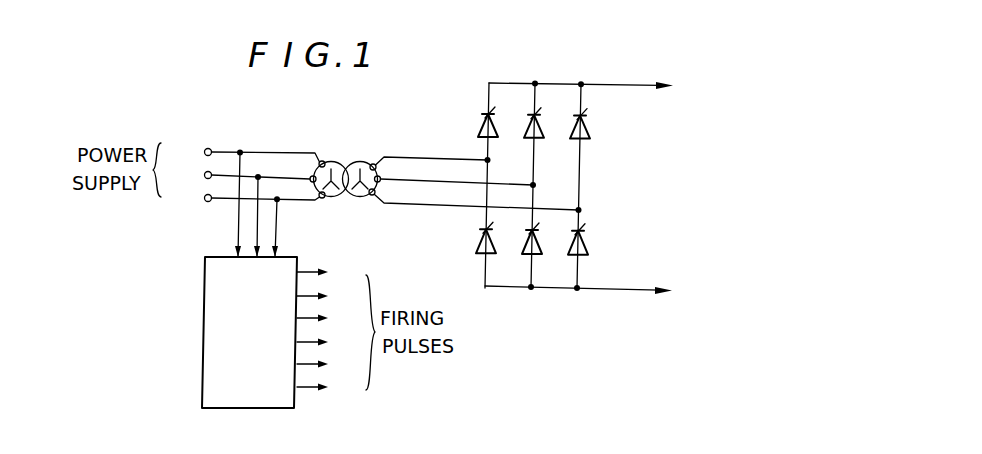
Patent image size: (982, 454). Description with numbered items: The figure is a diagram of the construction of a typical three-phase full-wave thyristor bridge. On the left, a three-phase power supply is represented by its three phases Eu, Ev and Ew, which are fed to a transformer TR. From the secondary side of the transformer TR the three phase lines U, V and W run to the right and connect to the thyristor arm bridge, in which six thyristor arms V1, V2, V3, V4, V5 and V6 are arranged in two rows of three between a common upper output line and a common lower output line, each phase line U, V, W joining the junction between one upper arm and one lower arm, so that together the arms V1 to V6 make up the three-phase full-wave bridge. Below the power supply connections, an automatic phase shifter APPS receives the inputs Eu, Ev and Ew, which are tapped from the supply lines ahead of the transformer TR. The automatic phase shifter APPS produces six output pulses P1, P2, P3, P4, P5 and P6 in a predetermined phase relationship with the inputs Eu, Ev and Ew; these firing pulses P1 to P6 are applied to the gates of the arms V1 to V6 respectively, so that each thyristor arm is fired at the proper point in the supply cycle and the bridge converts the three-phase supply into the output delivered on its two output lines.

The transformer TR is at (342, 162).
The automatic phase shifter APPS is at (249, 332).
The thyristor arm V1 is at (498, 111).
The thyristor arm V2 is at (589, 232).
The thyristor arm V3 is at (544, 112).
The thyristor arm V4 is at (497, 231).
The thyristor arm V5 is at (590, 112).
The thyristor arm V6 is at (543, 232).
The output pulse P1 is at (327, 272).
The output pulse P2 is at (327, 296).
The output pulse P3 is at (327, 318).
The output pulse P4 is at (327, 342).
The output pulse P5 is at (327, 364).
The output pulse P6 is at (327, 387).
The three-phase power supply Eu is at (242, 150).
The three-phase power supply Ev is at (237, 174).
The three-phase power supply Ew is at (242, 197).
The transformer secondary phase U line U is at (432, 151).
The transformer secondary phase V line V is at (457, 173).
The transformer secondary phase W line W is at (477, 197).